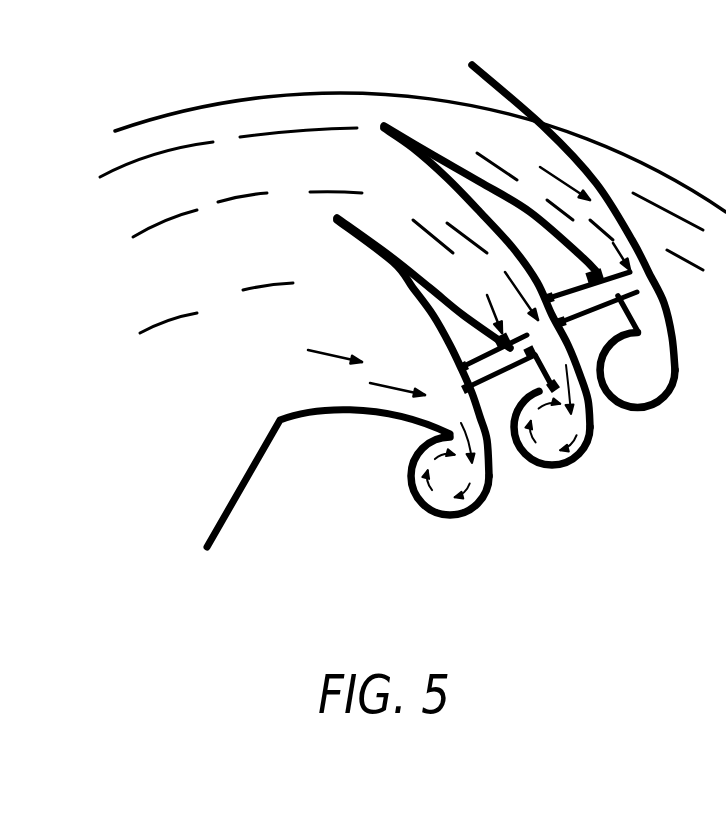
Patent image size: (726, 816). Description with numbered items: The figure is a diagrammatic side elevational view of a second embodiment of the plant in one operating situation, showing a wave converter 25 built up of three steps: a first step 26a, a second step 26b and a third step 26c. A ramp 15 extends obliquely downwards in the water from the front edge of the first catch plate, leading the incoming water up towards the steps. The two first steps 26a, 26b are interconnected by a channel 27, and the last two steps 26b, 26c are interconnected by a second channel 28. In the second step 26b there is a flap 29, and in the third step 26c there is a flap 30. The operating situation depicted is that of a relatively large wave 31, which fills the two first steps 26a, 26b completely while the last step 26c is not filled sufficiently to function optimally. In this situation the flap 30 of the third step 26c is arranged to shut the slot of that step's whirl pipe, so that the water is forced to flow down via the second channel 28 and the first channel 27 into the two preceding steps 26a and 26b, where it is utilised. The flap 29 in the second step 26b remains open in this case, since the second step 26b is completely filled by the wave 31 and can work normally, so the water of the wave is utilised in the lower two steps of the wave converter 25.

The ramp 15 is at (232, 487).
The wave converter 25 is at (540, 108).
The first step 26a is at (441, 388).
The second step 26b is at (423, 324).
The third step 26c is at (490, 271).
The channel 27 is at (493, 390).
The second channel 28 is at (618, 278).
The flap 29 is at (563, 335).
The flap 30 is at (643, 302).
The relatively large wave 31 is at (333, 93).